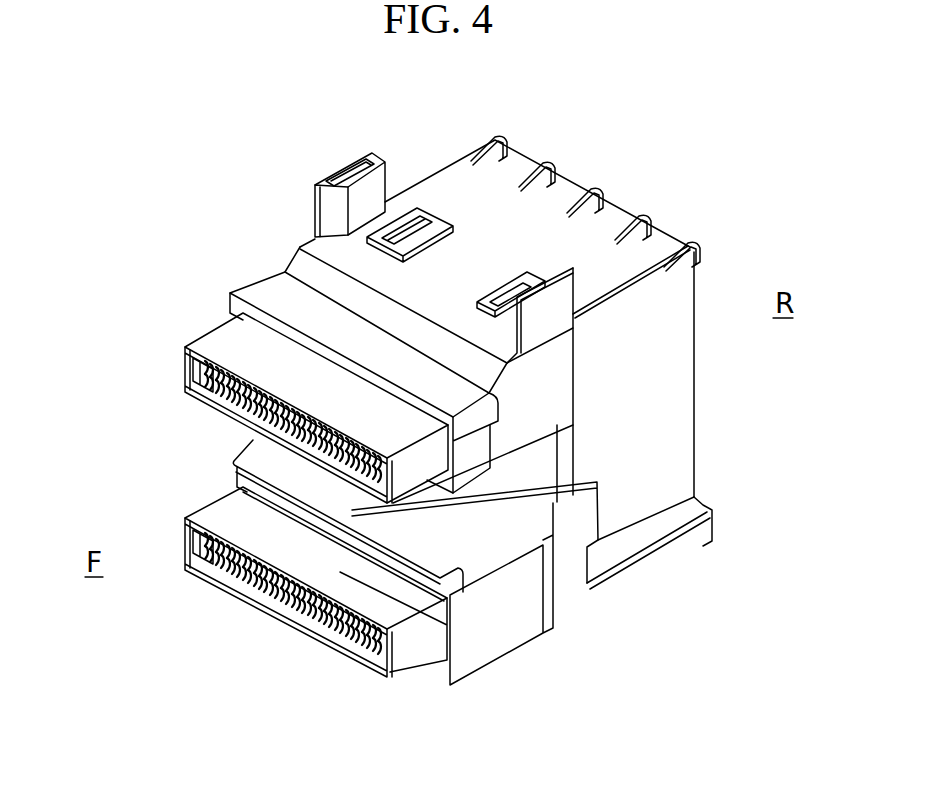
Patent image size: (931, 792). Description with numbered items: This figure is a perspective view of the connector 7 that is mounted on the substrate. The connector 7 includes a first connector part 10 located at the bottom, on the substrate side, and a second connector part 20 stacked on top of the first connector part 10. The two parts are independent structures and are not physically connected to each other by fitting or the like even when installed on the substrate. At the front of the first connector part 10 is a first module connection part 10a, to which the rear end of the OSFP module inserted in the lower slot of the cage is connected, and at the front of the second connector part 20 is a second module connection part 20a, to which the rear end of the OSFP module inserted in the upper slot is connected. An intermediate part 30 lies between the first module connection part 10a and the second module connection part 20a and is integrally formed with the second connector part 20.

The connector 7 is at (170, 186).
The second connector part 20 is at (412, 172).
The second module connection part 20a is at (228, 411).
The first connector part 10 is at (515, 645).
The first module connection part 10a is at (250, 600).
The intermediate part 30 is at (524, 496).